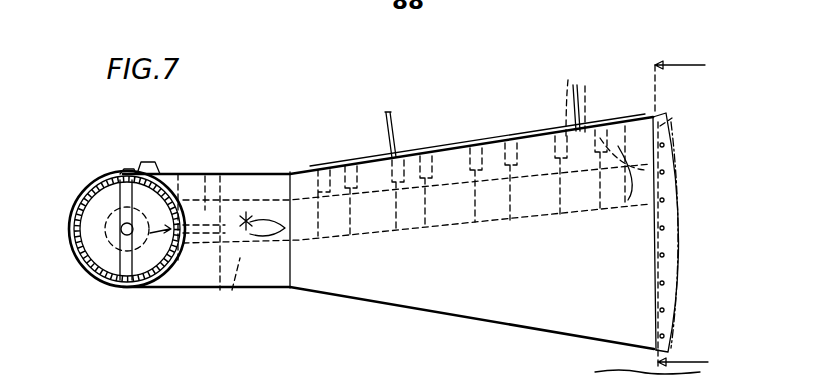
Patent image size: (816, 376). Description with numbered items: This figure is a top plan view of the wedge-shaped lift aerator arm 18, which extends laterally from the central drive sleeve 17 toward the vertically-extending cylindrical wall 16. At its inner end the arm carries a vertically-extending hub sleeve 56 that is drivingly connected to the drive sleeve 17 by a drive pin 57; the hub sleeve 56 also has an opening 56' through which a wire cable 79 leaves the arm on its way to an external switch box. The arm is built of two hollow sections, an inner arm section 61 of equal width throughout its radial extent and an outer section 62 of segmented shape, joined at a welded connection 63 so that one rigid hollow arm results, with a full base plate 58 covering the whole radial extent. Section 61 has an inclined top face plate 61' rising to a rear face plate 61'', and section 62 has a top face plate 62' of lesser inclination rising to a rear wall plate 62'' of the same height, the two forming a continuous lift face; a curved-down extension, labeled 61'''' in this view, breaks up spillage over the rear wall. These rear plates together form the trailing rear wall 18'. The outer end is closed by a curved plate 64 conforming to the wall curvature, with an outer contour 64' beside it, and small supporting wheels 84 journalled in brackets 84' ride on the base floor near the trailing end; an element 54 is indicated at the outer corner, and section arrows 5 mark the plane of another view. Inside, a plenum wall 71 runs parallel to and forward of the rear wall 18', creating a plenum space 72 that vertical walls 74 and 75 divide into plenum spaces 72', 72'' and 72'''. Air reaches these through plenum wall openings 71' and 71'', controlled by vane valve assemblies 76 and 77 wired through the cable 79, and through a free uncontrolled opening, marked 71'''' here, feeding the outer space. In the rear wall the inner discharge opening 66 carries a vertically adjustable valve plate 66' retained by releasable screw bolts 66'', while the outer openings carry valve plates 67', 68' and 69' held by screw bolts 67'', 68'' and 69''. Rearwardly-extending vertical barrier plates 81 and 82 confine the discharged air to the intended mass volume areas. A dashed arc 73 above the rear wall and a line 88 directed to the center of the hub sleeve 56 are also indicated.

The dimension arrow 5 is at (690, 214).
The vertically-extending cylindrical wall 16 is at (84, 375).
The central drive sleeve 17 is at (595, 360).
The wedge-shaped lift aerator arm 18 is at (437, 260).
The rear face edge / main rear wall 18' is at (369, 109).
The end flange corner 54 is at (664, 122).
The hub sleeve 56 is at (112, 251).
The opening in hub sleeve 56' is at (161, 329).
The drive pin 57 is at (112, 176).
The base plate 58 is at (384, 309).
The arm section 61 is at (150, 310).
The inclined top face plate 61' is at (191, 317).
The rear face plate 61'' is at (143, 147).
The body fitting 61'''' is at (111, 129).
The segmented section 62 is at (420, 339).
The top face plate 62' is at (483, 336).
The rear wall plate 62'' is at (327, 99).
The welded connection 63 is at (250, 292).
The curved plate 64 is at (682, 232).
The end flange outer edge 64' is at (709, 311).
The air discharge opening 66 is at (296, 119).
The vertically adjustable valve plate 66' is at (247, 145).
The releasable screw bolts 66'' is at (162, 178).
The vertically-adjustable valve plate 67' is at (335, 172).
The releasable screw bolts 67'' is at (351, 143).
The vertically-adjustable valve plate 68' is at (456, 144).
The releasable screw bolts 68'' is at (536, 140).
The vertically-adjustable valve plate 69' is at (593, 140).
The releasable screw bolts 69'' is at (624, 129).
The plenum wall 71 is at (371, 255).
The plenum wall opening 71' is at (243, 333).
The plenum wall opening 71'' is at (492, 237).
The hanger 71'''' is at (636, 184).
The plenum space 72 is at (416, 203).
The plenum space 72' is at (278, 193).
The plenum space 72'' is at (566, 211).
The plenum space 72''' is at (606, 216).
The pivot path 73 is at (542, 152).
The vertical wall 74 is at (402, 158).
The vertical wall 75 is at (573, 86).
The vane valve assembly 76 is at (230, 292).
The vane valve assembly 77 is at (522, 240).
The wire cable 79 is at (318, 250).
The vertical barrier plate 81 is at (392, 112).
The vertical barrier plate 82 is at (578, 126).
The supporting wheels 84 is at (587, 192).
The brackets 84' is at (692, 114).
The shaft 88 is at (111, 224).